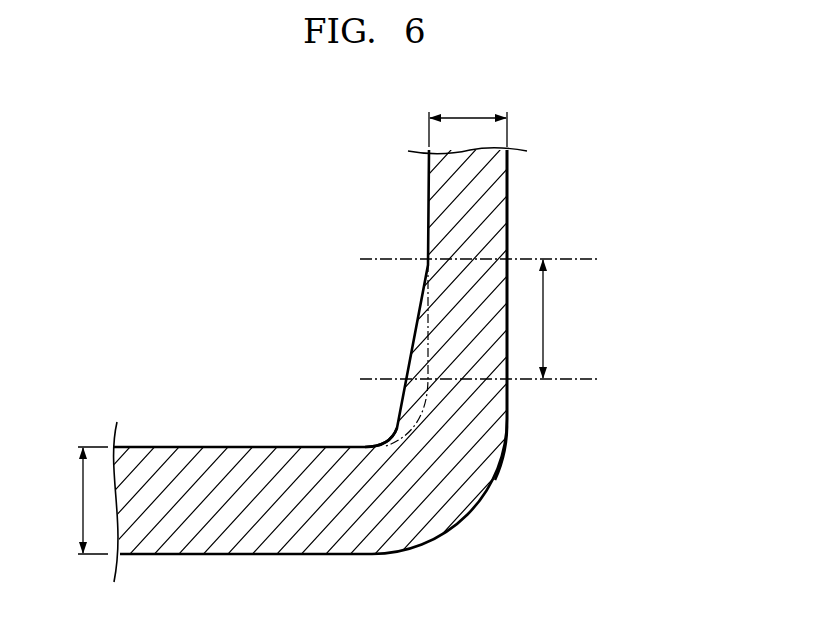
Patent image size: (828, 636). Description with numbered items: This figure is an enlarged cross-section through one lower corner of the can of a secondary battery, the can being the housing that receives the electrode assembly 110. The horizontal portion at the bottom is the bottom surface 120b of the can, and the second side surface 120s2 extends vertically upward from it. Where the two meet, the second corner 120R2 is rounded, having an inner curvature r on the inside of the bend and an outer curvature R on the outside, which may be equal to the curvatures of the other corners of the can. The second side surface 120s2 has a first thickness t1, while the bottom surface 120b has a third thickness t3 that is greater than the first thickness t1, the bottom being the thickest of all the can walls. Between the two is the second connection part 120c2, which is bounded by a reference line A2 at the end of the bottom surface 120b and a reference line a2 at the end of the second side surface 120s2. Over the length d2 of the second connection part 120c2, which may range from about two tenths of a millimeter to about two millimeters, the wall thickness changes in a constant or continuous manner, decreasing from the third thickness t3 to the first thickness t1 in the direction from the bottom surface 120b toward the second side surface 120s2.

The electrode assembly 110 is at (562, 157).
The second side surface 120s2 is at (493, 213).
The second connection part 120c2 is at (460, 322).
The bottom surface 120b is at (227, 535).
The second corner 120R2 is at (463, 517).
The first thickness t1 is at (468, 118).
The third thickness t3 is at (83, 500).
The length of second connection part d2 is at (560, 319).
The reference line a2 is at (498, 259).
The reference line A2 is at (497, 379).
The inner curvature r is at (384, 432).
The outer curvature R is at (504, 464).